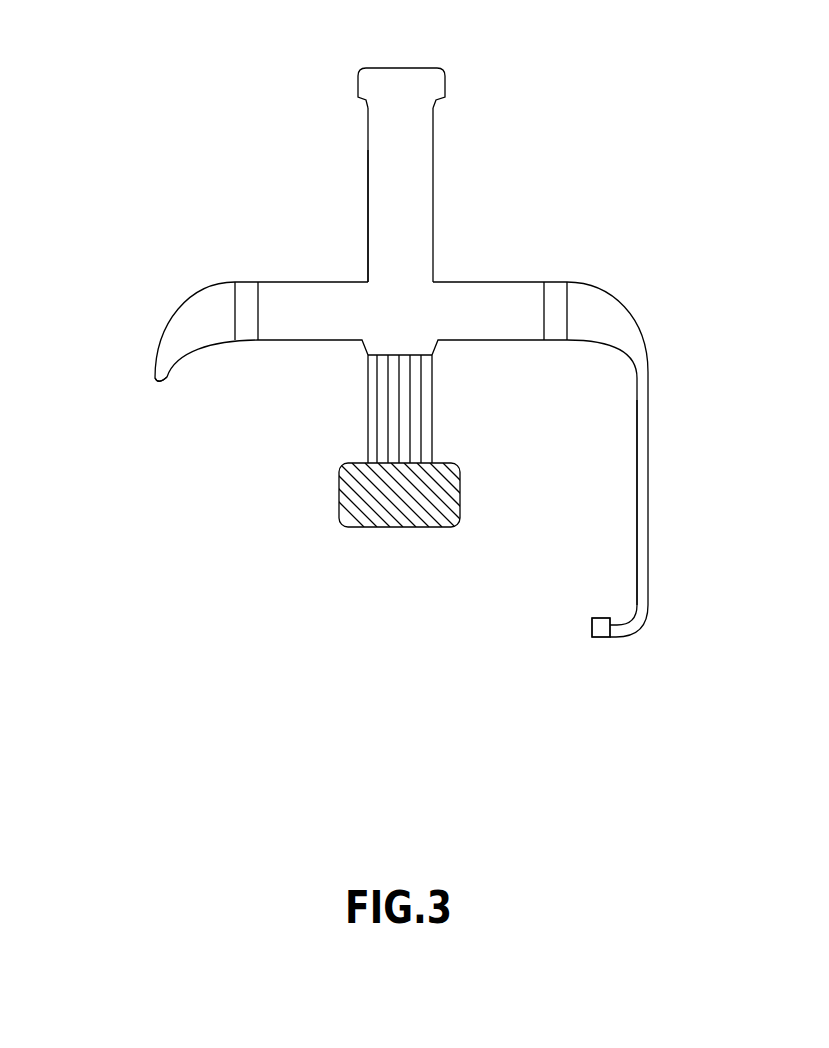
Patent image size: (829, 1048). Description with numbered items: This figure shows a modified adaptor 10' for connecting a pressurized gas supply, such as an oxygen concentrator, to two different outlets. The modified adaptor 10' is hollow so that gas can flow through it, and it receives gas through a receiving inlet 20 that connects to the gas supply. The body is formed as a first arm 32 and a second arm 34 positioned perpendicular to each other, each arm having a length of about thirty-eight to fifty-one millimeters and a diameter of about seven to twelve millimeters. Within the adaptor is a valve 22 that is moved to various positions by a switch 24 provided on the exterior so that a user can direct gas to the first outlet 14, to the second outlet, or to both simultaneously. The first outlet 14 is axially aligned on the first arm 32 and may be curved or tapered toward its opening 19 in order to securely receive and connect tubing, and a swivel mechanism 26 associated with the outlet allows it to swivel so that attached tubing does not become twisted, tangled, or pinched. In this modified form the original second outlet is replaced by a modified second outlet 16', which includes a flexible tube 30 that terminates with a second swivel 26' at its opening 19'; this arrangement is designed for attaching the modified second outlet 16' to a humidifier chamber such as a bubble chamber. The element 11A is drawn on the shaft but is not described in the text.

The modified adaptor 10' is at (647, 97).
The receiving inlet 20 is at (442, 74).
The second arm 34 is at (366, 150).
The stem portion 11A is at (366, 216).
The first arm 32 is at (320, 281).
The swivel mechanism 26 is at (431, 301).
The first outlet 14 is at (168, 382).
The opening 19 is at (126, 412).
The valve 22 is at (413, 358).
The switch 24 is at (449, 490).
The modified second outlet 16' is at (639, 459).
The flexible tube 30 is at (640, 522).
The opening 19' is at (568, 634).
The second swivel 26' is at (636, 645).